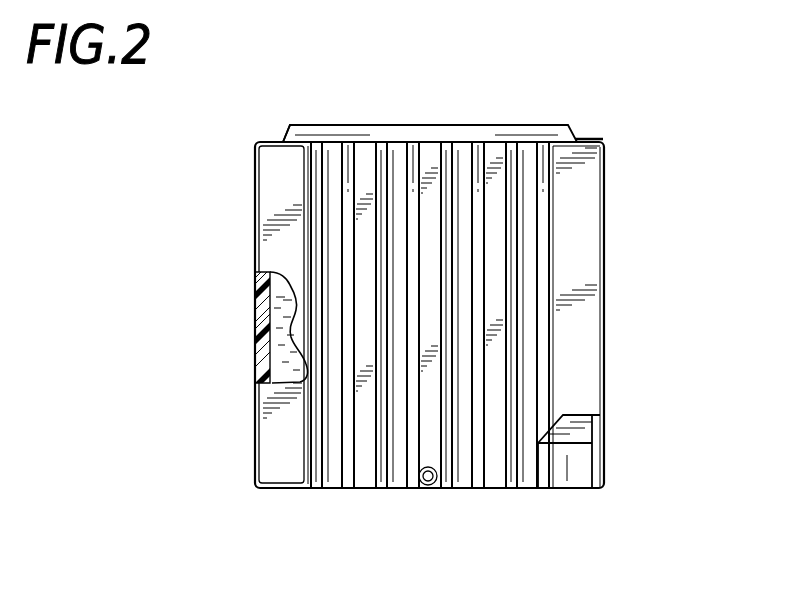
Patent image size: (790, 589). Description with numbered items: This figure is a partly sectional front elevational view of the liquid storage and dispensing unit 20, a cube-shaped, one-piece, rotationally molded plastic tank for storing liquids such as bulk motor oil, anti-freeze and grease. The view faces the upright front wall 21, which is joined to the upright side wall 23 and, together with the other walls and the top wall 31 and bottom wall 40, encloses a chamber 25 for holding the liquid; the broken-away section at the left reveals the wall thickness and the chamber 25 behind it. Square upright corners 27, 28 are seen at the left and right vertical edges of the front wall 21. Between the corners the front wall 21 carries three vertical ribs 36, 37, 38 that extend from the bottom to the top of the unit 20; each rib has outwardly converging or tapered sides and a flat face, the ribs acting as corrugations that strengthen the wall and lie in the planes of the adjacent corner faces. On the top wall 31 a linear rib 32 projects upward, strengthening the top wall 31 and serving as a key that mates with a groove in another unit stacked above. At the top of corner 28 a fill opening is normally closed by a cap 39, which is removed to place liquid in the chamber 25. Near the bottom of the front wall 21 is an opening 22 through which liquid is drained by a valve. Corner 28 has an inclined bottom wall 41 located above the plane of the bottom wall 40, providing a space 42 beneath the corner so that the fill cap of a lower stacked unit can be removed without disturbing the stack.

The liquid storage and dispensing unit 20 is at (613, 101).
The front wall 21 is at (332, 328).
The opening 22 is at (428, 490).
The side wall 23 is at (266, 362).
The chamber 25 is at (266, 290).
The square upright corner 27 is at (280, 173).
The square upright corner 28 is at (583, 270).
The top wall 31 is at (276, 139).
The linear rib 32 is at (518, 138).
The vertical rib 36 is at (362, 472).
The vertical rib 37 is at (430, 450).
The vertical rib 38 is at (497, 473).
The cap 39 is at (590, 140).
The bottom wall 40 is at (289, 490).
The inclined bottom wall 41 is at (592, 433).
The space 42 is at (573, 468).